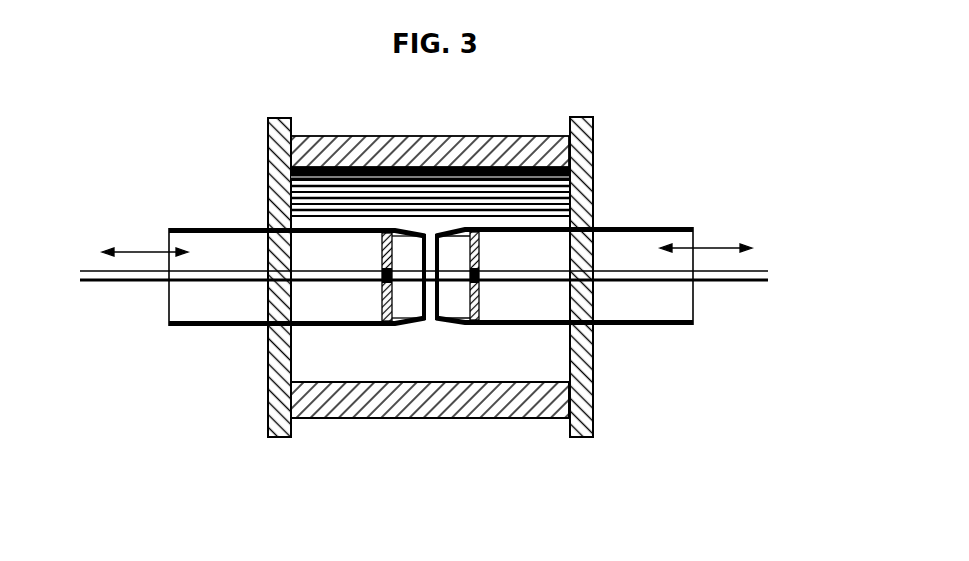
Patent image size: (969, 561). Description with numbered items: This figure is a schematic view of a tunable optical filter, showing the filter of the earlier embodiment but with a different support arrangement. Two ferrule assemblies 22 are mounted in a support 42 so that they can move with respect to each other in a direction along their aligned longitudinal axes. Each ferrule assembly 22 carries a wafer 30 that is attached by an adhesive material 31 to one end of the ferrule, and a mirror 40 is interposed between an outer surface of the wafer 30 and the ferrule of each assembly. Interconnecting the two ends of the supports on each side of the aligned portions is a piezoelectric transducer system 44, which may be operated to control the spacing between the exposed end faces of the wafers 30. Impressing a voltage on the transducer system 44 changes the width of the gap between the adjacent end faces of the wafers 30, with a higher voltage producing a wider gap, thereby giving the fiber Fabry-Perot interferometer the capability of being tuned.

The ferrule assembly 22 is at (196, 242).
The wafer 30 is at (448, 302).
The adhesive material 31 is at (380, 245).
The mirror 40 is at (386, 305).
The support 42 is at (593, 350).
The piezoelectric transducer system 44 is at (313, 400).